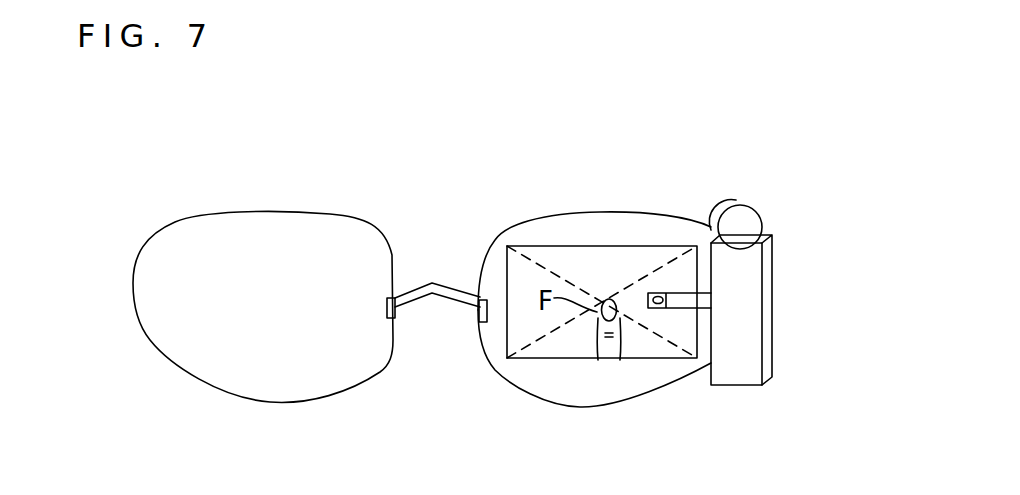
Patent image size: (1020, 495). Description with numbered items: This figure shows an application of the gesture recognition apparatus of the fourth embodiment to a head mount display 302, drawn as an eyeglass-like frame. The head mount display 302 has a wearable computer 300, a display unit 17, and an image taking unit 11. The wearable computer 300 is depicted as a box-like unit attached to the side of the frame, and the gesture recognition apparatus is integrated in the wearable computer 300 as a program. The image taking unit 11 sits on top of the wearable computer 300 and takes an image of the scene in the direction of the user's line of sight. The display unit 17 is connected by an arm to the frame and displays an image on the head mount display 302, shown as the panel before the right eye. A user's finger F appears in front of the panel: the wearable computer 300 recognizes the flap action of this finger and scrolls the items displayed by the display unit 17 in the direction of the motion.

The head mount display 302 is at (533, 255).
The display unit 17 is at (650, 293).
The image taking unit 11 is at (763, 226).
The wearable computer 300 is at (772, 307).